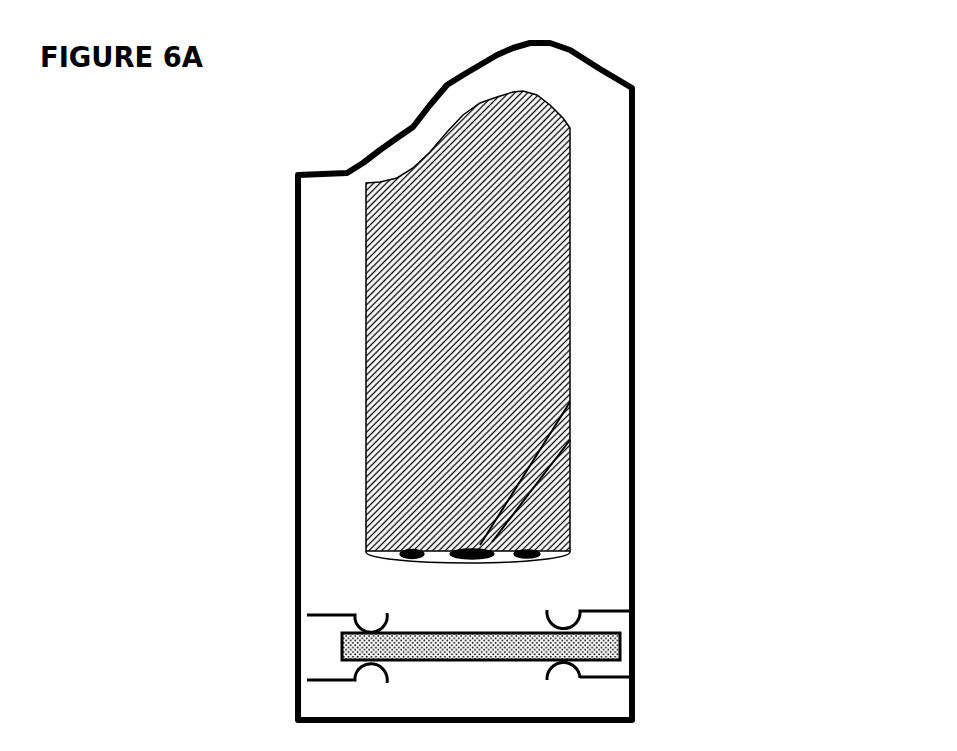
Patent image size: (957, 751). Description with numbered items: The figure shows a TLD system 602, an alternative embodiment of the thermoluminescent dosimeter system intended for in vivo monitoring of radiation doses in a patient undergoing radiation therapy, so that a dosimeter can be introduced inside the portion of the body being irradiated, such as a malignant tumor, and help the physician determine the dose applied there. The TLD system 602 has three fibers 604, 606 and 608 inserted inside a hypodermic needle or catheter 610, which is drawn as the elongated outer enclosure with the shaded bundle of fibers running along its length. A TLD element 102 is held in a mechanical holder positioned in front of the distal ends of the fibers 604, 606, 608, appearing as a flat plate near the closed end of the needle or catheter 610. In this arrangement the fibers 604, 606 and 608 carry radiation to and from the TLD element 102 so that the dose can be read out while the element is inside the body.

The TLD system 602 is at (180, 380).
The hypodermic needle or catheter 610 is at (297, 505).
The fiber 604 is at (570, 515).
The fiber 606 is at (570, 440).
The fiber 608 is at (570, 402).
The TLD element 102 is at (600, 643).